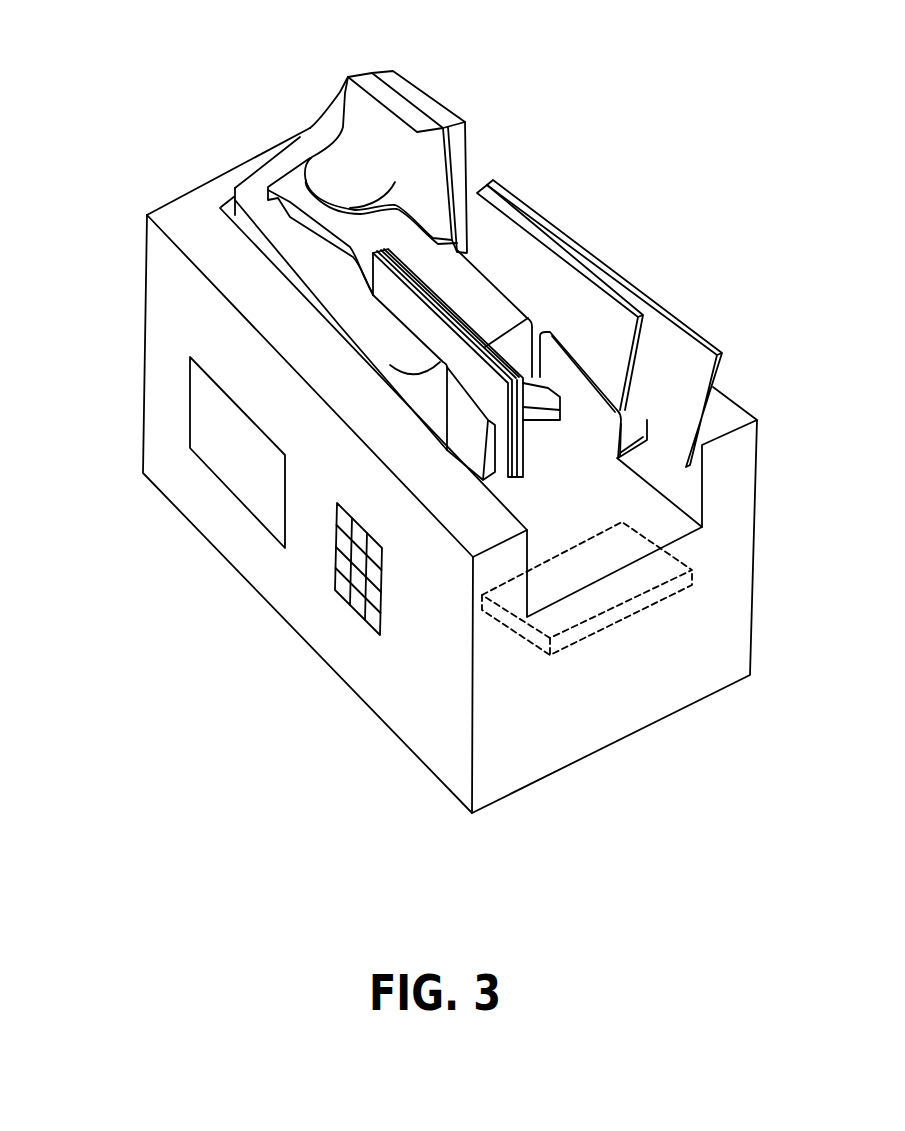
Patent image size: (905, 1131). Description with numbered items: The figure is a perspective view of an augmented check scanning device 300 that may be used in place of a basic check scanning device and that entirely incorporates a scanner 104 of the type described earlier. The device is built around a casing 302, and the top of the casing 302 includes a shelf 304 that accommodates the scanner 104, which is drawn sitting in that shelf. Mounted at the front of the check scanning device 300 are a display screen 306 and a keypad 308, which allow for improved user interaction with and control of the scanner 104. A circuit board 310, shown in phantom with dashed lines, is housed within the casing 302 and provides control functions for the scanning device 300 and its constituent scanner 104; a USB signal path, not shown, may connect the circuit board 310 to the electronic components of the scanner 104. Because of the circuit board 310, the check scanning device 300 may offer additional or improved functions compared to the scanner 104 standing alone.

The augmented check scanning device 300 is at (157, 134).
The casing 302 is at (145, 350).
The shelf 304 is at (622, 505).
The display screen 306 is at (235, 497).
The keypad 308 is at (345, 605).
The circuit board 310 is at (617, 622).
The scanner 104 is at (515, 172).